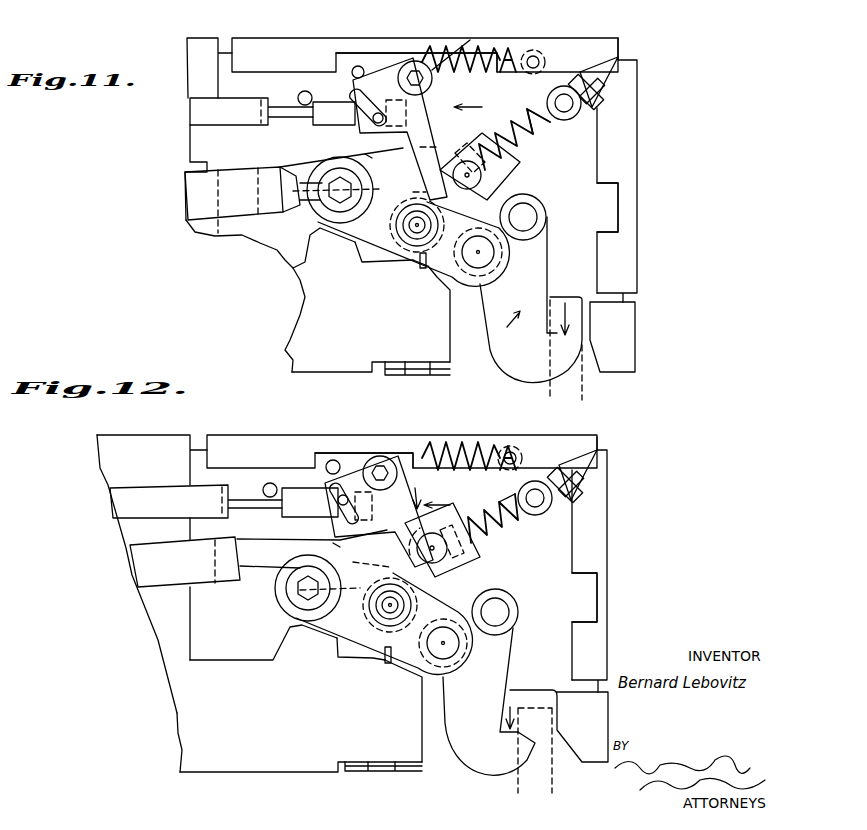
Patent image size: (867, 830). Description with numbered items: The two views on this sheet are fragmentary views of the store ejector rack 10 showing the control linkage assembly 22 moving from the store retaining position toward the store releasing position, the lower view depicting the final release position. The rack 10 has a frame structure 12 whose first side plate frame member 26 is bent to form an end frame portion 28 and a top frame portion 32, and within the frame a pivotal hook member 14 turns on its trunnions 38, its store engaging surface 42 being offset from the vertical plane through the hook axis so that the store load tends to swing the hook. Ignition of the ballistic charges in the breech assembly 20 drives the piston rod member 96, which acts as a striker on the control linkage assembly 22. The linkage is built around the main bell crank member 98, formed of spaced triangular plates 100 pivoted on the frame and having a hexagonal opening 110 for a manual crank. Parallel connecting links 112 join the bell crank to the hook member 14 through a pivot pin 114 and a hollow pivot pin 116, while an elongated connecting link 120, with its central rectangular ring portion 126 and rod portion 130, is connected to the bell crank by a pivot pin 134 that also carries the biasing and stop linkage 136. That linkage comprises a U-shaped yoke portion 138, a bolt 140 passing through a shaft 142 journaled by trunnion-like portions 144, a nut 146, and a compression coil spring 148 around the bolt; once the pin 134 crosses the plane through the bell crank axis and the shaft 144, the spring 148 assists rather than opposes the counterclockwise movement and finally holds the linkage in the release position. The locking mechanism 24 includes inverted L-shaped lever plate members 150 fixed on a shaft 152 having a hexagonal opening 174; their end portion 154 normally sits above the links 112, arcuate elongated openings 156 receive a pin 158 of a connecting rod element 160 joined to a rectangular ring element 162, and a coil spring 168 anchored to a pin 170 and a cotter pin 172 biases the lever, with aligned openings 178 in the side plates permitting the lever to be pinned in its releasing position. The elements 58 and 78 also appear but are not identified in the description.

In FIG. 11, the store ejector rack 10 is at (176, 140).
In FIG. 12, the store ejector rack 10 is at (110, 568).
In FIG. 11, the frame structure 12 is at (648, 131).
In FIG. 12, the frame structure 12 is at (618, 512).
In FIG. 11, the hook member 14 is at (494, 376).
In FIG. 12, the hook member 14 is at (463, 778).
In FIG. 11, the breech assembly 20 is at (340, 370).
In FIG. 12, the breech assembly 20 is at (262, 781).
In FIG. 11, the control linkage assembly 22 is at (303, 220).
In FIG. 12, the control linkage assembly 22 is at (270, 636).
In FIG. 11, the locking mechanism 24 is at (478, 107).
In FIG. 12, the locking mechanism 24 is at (440, 498).
In FIG. 11, the first side plate frame member 26 is at (600, 215).
In FIG. 12, the first side plate frame member 26 is at (565, 600).
In FIG. 11, the end frame portion 28 is at (640, 182).
In FIG. 12, the end frame portion 28 is at (610, 548).
In FIG. 11, the top frame portion 32 is at (425, 44).
In FIG. 12, the top frame portion 32 is at (402, 438).
In FIG. 11, the trunnions 38 is at (533, 208).
In FIG. 12, the trunnions 38 is at (505, 600).
In FIG. 11, the store engaging surface 42 is at (600, 322).
In FIG. 12, the store engaging surface 42 is at (528, 742).
In FIG. 11, the housing body 58 is at (368, 335).
In FIG. 12, the housing body 58 is at (324, 730).
In FIG. 11, the base strip 78 is at (412, 375).
In FIG. 12, the base strip 78 is at (368, 771).
In FIG. 11, the piston rod member 96 is at (420, 266).
In FIG. 12, the piston rod member 96 is at (388, 668).
In FIG. 11, the main bell crank member 98 is at (360, 157).
In FIG. 12, the main bell crank member 98 is at (328, 546).
In FIG. 11, the triangular plates 100 is at (356, 243).
In FIG. 12, the triangular plates 100 is at (325, 648).
In FIG. 11, the hexagonal opening 110 is at (328, 184).
In FIG. 12, the hexagonal opening 110 is at (300, 588).
In FIG. 11, the connecting links 112 is at (440, 300).
In FIG. 12, the connecting links 112 is at (412, 714).
In FIG. 11, the pivot pin 114 is at (483, 252).
In FIG. 12, the pivot pin 114 is at (448, 644).
In FIG. 11, the hollow pivot pin 116 is at (402, 240).
In FIG. 12, the hollow pivot pin 116 is at (378, 622).
In FIG. 11, the elongated connecting link 120 is at (184, 160).
In FIG. 12, the elongated connecting link 120 is at (148, 614).
In FIG. 11, the central rectangular ring portion 126 is at (240, 228).
In FIG. 12, the central rectangular ring portion 126 is at (205, 573).
In FIG. 11, the rod portion 130 is at (278, 170).
In FIG. 12, the rod portion 130 is at (266, 544).
In FIG. 11, the pivot pin 134 is at (466, 160).
In FIG. 12, the pivot pin 134 is at (447, 558).
In FIG. 11, the biasing and stop linkage 136 is at (600, 103).
In FIG. 12, the biasing and stop linkage 136 is at (540, 481).
In FIG. 11, the U-shaped yoke portion 138 is at (512, 170).
In FIG. 12, the U-shaped yoke portion 138 is at (482, 553).
In FIG. 11, the bolt 140 is at (540, 132).
In FIG. 12, the bolt 140 is at (520, 522).
In FIG. 11, the shaft 142 is at (584, 78).
In FIG. 12, the shaft 142 is at (570, 468).
In FIG. 11, the trunnion-like portions 144 is at (570, 108).
In FIG. 12, the trunnion-like portions 144 is at (542, 503).
In FIG. 11, the nut 146 is at (626, 58).
In FIG. 12, the nut 146 is at (605, 455).
In FIG. 11, the compression coil spring 148 is at (530, 110).
In FIG. 12, the compression coil spring 148 is at (508, 505).
In FIG. 11, the lever plate members 150 is at (402, 52).
In FIG. 12, the lever plate members 150 is at (360, 452).
In FIG. 11, the shaft 152 is at (455, 53).
In FIG. 12, the shaft 152 is at (425, 450).
In FIG. 11, the end portion 154 is at (418, 191).
In FIG. 12, the end portion 154 is at (392, 585).
In FIG. 11, the elongated openings 156 is at (360, 97).
In FIG. 12, the elongated openings 156 is at (335, 490).
In FIG. 11, the pin 158 is at (384, 117).
In FIG. 12, the pin 158 is at (352, 508).
In FIG. 11, the connecting rod element 160 is at (314, 121).
In FIG. 12, the connecting rod element 160 is at (320, 509).
In FIG. 11, the rectangular ring element 162 is at (205, 108).
In FIG. 12, the rectangular ring element 162 is at (196, 501).
In FIG. 11, the coil spring 168 is at (522, 50).
In FIG. 12, the coil spring 168 is at (502, 448).
In FIG. 11, the pin 170 is at (540, 60).
In FIG. 12, the pin 170 is at (513, 450).
In FIG. 11, the cotter pin 172 is at (418, 61).
In FIG. 12, the cotter pin 172 is at (380, 456).
In FIG. 11, the hexagonal opening 174 is at (440, 82).
In FIG. 12, the hexagonal opening 174 is at (421, 495).
In FIG. 11, the aligned openings 178 is at (351, 70).
In FIG. 12, the aligned openings 178 is at (326, 464).